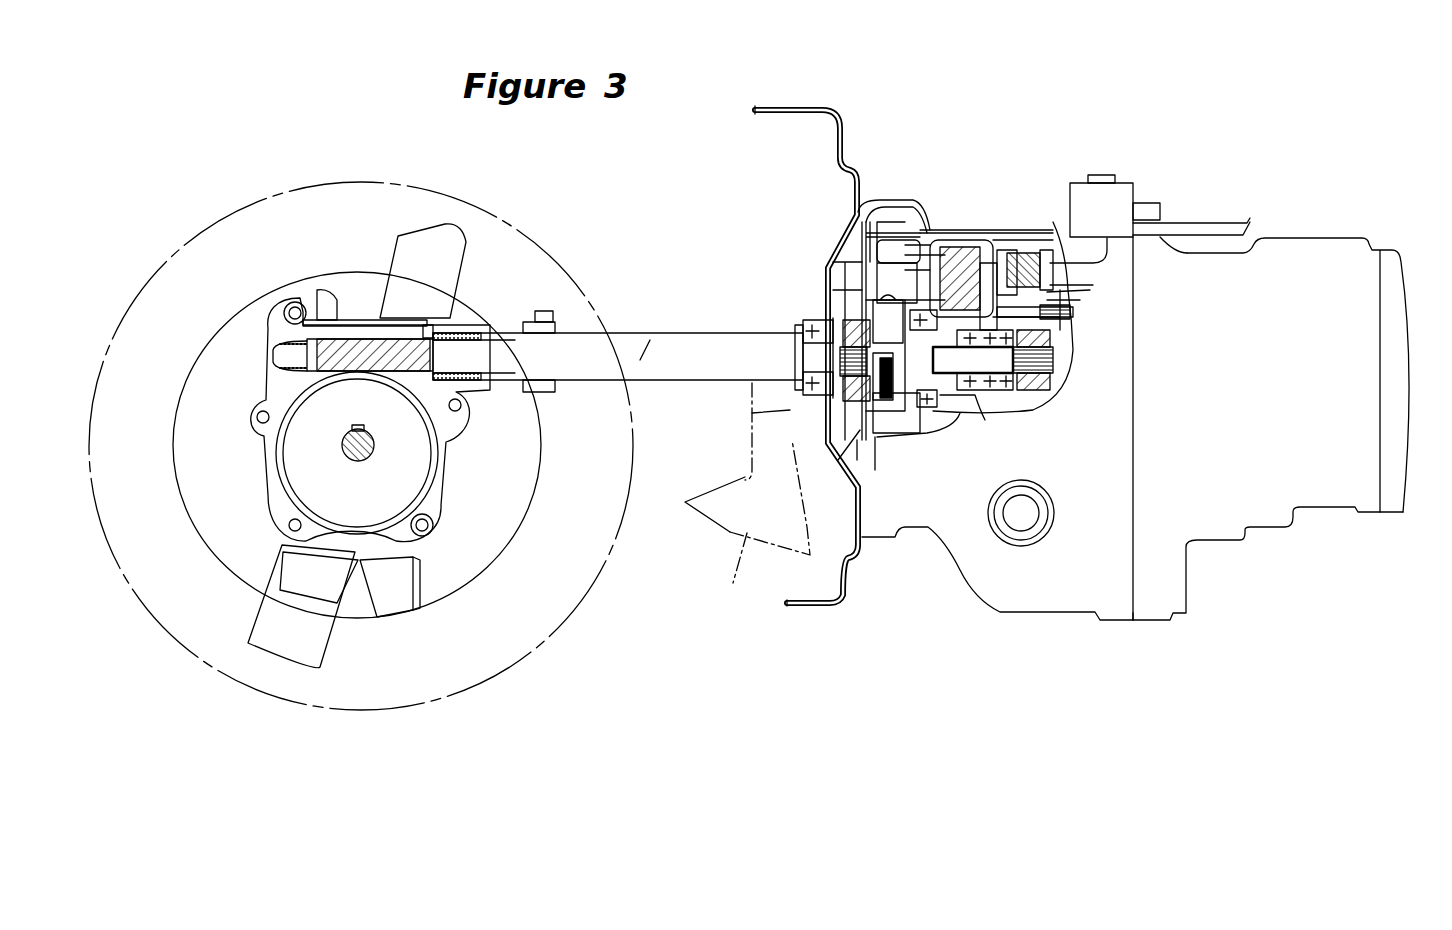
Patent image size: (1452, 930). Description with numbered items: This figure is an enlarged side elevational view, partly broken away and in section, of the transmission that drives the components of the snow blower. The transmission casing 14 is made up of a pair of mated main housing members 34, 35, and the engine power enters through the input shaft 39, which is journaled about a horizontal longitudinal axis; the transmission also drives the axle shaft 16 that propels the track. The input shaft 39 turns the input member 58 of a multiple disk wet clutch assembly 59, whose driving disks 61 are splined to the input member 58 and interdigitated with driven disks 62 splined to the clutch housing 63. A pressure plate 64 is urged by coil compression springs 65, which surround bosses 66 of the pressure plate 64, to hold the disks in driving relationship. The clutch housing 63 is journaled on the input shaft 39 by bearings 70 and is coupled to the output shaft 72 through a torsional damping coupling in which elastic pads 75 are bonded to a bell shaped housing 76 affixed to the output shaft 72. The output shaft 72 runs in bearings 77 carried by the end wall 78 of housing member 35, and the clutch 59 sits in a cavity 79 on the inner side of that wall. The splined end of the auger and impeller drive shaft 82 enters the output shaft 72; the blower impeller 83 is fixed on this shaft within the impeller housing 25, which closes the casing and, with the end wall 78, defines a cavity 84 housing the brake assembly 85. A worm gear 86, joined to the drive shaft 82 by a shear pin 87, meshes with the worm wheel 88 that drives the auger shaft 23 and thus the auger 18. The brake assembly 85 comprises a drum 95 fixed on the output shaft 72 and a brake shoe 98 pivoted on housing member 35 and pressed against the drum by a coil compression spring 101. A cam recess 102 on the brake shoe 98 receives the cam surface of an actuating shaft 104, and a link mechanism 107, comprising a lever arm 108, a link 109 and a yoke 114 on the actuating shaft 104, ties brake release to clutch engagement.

The transmission casing 14 is at (1108, 640).
The axle shaft 16 is at (1028, 520).
The auger 18 is at (332, 692).
The auger shaft 23 is at (375, 445).
The impeller housing 25 is at (808, 608).
The main housing member 34 is at (1327, 467).
The main housing member 35 is at (1005, 600).
The input shaft 39 is at (1065, 375).
The input member 58 is at (1085, 289).
The multiple disk wet clutch assembly 59 is at (1005, 250).
The driving disks 61 is at (988, 260).
The driven disks 62 is at (1030, 252).
The clutch housing 63 is at (968, 245).
The pressure plate 64 is at (958, 245).
The coil compression springs 65 is at (1055, 370).
The bosses 66 is at (1075, 312).
The bearings 70 is at (1000, 400).
The output shaft 72 is at (746, 413).
The elastic pads 75 is at (938, 255).
The bell shaped housing 76 is at (933, 235).
The bearings 77 is at (918, 420).
The end wall 78 is at (855, 245).
The cavity 79 is at (1108, 240).
The auger and impeller drive shaft 82 is at (652, 340).
The blower impeller 83 is at (740, 563).
The cavity 84 is at (855, 175).
The brake assembly 85 is at (820, 288).
The worm gear 86 is at (345, 340).
The shear pin 87 is at (540, 320).
The worm wheel 88 is at (300, 470).
The drum 95 is at (858, 458).
The brake shoe 98 is at (875, 292).
The coil compression spring 101 is at (790, 440).
The cam recess 102 is at (845, 301).
The actuating shaft 104 is at (790, 356).
The link mechanism 107 is at (830, 240).
The lever arm 108 is at (1145, 228).
The link 109 is at (1150, 262).
The yoke 114 is at (835, 255).